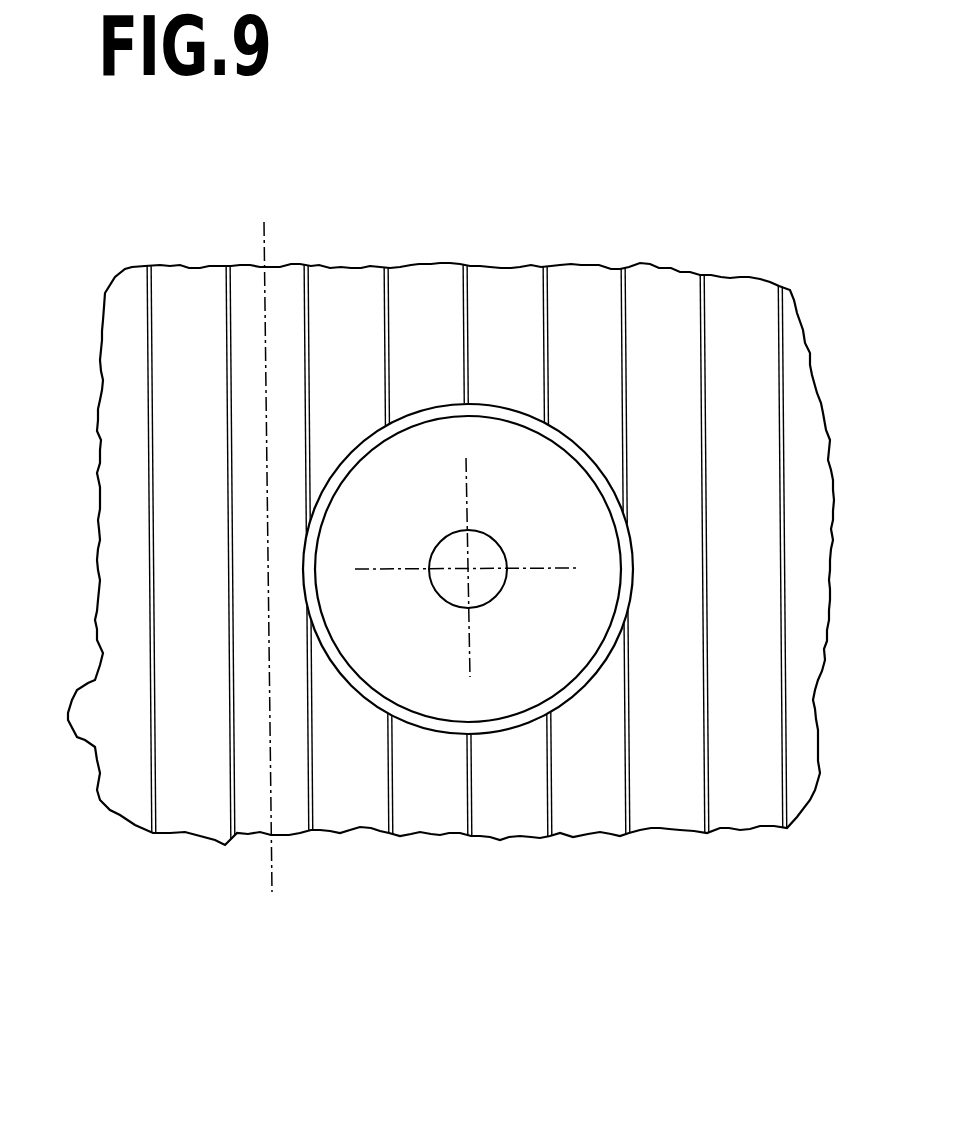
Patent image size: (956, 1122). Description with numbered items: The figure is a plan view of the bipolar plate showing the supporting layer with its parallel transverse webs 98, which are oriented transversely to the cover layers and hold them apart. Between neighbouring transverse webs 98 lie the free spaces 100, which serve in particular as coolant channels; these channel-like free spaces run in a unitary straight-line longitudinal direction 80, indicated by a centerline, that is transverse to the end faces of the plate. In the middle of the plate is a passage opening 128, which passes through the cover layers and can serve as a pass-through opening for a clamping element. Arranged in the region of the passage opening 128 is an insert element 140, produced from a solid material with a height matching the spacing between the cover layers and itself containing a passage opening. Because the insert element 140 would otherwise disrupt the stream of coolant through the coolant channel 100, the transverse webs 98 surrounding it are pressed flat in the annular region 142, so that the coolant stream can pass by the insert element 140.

The longitudinal direction 80 is at (265, 242).
The transverse webs 98 is at (553, 298).
The free spaces 100 is at (292, 810).
The passage opening 128 is at (484, 552).
The insert element 140 is at (503, 693).
The region 142 is at (372, 438).